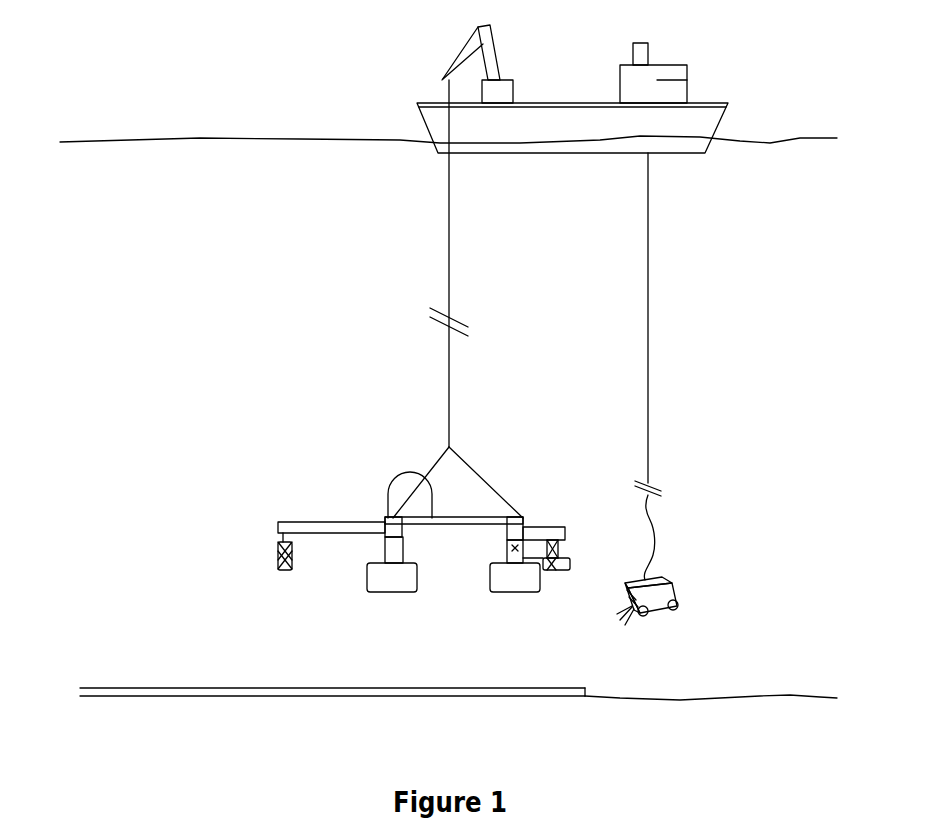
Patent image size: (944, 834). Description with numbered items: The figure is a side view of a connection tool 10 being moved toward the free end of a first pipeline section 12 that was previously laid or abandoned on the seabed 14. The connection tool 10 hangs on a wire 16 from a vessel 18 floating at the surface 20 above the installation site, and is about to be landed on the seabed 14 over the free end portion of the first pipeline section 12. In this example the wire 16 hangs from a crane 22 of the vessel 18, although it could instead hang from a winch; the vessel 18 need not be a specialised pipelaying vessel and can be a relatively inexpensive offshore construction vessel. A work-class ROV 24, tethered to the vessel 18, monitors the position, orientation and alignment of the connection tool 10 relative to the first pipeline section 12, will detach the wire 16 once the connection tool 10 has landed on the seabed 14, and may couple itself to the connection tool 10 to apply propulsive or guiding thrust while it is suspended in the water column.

The connection tool 10 is at (368, 443).
The first pipeline section 12 is at (195, 688).
The seabed 14 is at (795, 695).
The wire 16 is at (448, 250).
The vessel 18 is at (630, 80).
The surface 20 is at (202, 138).
The crane 22 is at (492, 45).
The work-class ROV 24 is at (670, 588).